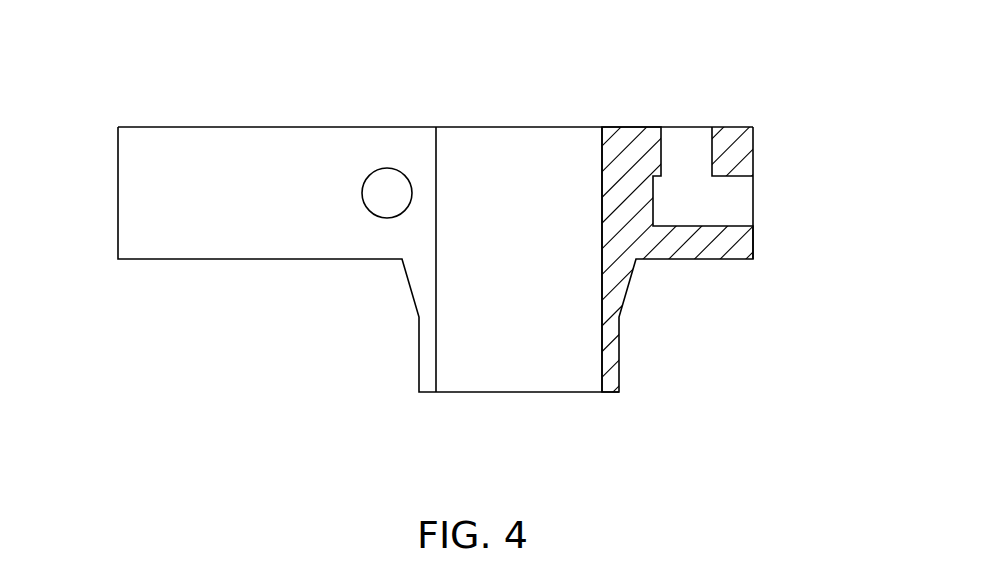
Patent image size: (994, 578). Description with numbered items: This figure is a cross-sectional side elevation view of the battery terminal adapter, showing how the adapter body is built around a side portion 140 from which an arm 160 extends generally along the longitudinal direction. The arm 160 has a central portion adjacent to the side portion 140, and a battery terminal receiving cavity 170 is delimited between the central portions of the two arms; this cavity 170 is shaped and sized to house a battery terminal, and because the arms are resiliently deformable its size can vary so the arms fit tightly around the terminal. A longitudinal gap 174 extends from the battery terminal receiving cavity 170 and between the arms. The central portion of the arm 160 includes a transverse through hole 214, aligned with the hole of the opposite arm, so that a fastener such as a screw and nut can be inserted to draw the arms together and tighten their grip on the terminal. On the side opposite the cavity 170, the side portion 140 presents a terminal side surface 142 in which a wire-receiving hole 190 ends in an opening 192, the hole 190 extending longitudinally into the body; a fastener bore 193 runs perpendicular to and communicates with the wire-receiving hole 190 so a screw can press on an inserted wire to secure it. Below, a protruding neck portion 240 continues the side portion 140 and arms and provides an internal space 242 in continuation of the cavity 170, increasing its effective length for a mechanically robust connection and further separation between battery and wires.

The side portion 140 is at (633, 155).
The terminal side surface 142 is at (755, 145).
The arm 160 is at (287, 140).
The battery terminal receiving cavity 170 is at (521, 183).
The longitudinal gap 174 is at (206, 178).
The wire-receiving hole 190 is at (735, 210).
The opening 192 is at (755, 192).
The fastener bore 193 is at (685, 142).
The transverse through hole 214 is at (387, 190).
The protruding neck portion 240 is at (620, 338).
The internal space 242 is at (522, 368).